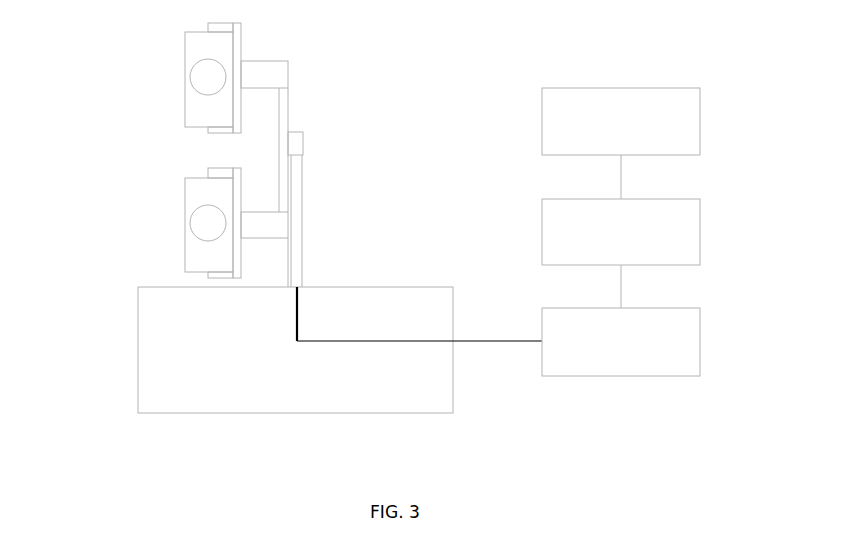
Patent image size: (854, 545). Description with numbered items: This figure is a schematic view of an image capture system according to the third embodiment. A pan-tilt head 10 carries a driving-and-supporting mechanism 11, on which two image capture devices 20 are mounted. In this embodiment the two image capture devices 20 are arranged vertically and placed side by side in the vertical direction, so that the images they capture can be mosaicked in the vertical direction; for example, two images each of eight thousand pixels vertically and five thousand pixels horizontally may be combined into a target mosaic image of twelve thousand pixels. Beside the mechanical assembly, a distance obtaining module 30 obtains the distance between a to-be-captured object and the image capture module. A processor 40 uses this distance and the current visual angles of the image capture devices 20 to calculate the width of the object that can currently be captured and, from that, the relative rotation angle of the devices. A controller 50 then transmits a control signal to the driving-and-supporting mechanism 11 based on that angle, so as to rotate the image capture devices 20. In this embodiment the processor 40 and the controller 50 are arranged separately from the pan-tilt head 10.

The pan-tilt head 10 is at (138, 323).
The driving-and-supporting mechanism 11 is at (165, 273).
The image capture devices 20 is at (200, 53).
The distance obtaining module 30 is at (643, 88).
The processor 40 is at (701, 220).
The controller 50 is at (701, 342).